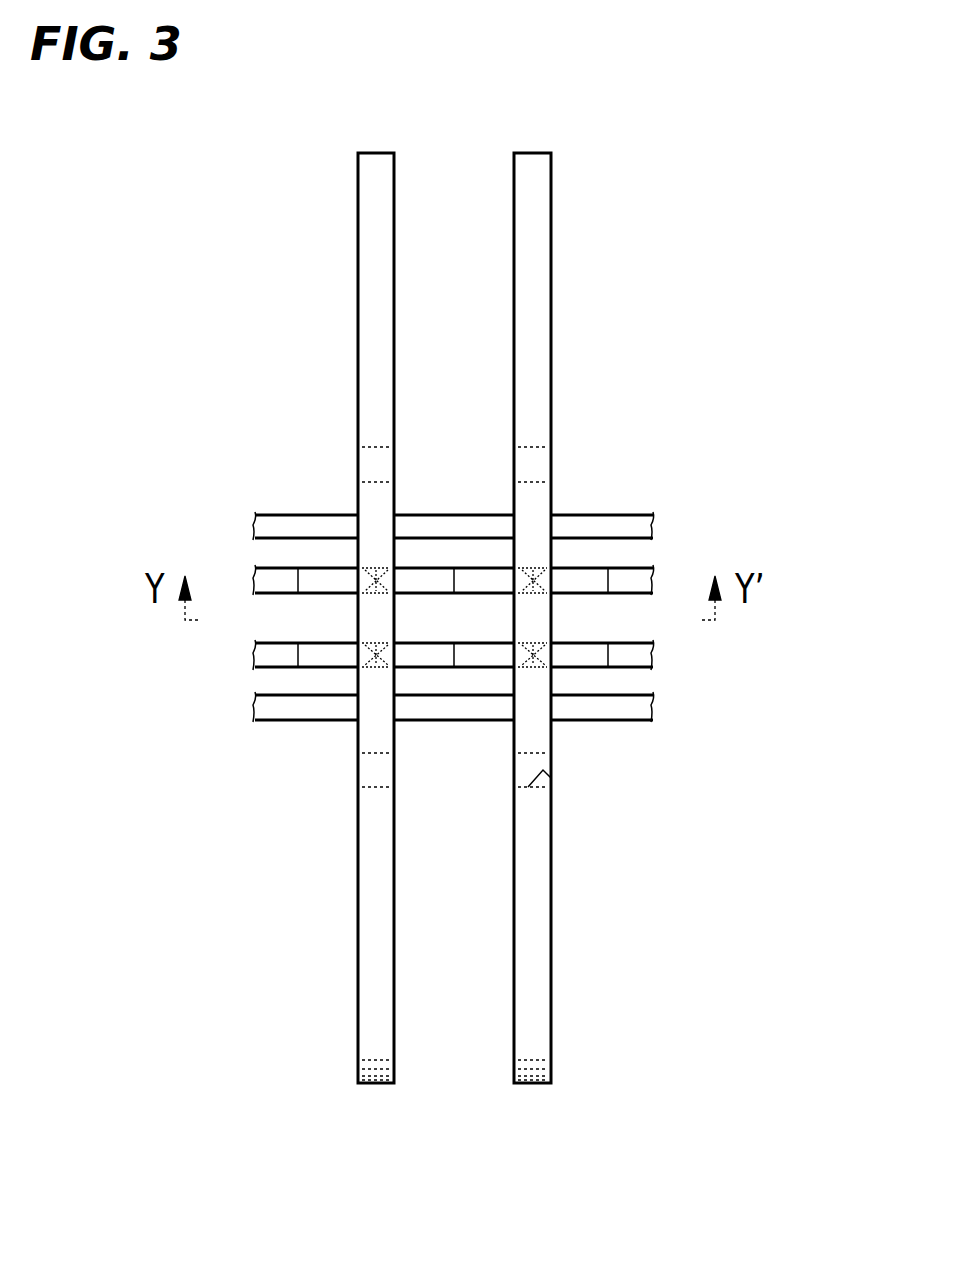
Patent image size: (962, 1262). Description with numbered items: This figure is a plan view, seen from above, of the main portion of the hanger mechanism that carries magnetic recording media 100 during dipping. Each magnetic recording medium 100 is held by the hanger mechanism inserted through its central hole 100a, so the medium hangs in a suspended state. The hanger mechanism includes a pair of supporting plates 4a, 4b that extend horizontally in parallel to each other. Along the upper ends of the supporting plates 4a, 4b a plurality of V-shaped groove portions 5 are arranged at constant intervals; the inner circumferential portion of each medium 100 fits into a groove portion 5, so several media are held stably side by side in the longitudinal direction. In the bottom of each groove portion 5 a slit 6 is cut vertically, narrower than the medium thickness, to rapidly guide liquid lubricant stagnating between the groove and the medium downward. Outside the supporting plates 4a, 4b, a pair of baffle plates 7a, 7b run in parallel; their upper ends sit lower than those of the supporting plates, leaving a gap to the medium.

The magnetic recording medium 100 is at (357, 1028).
The central hole 100a is at (551, 775).
The baffle plate 7a is at (300, 515).
The baffle plate 7b is at (298, 720).
The supporting plate 4a is at (275, 566).
The supporting plate 4b is at (275, 670).
The V-shaped groove portion 5 is at (333, 580).
The slit 6 is at (398, 586).